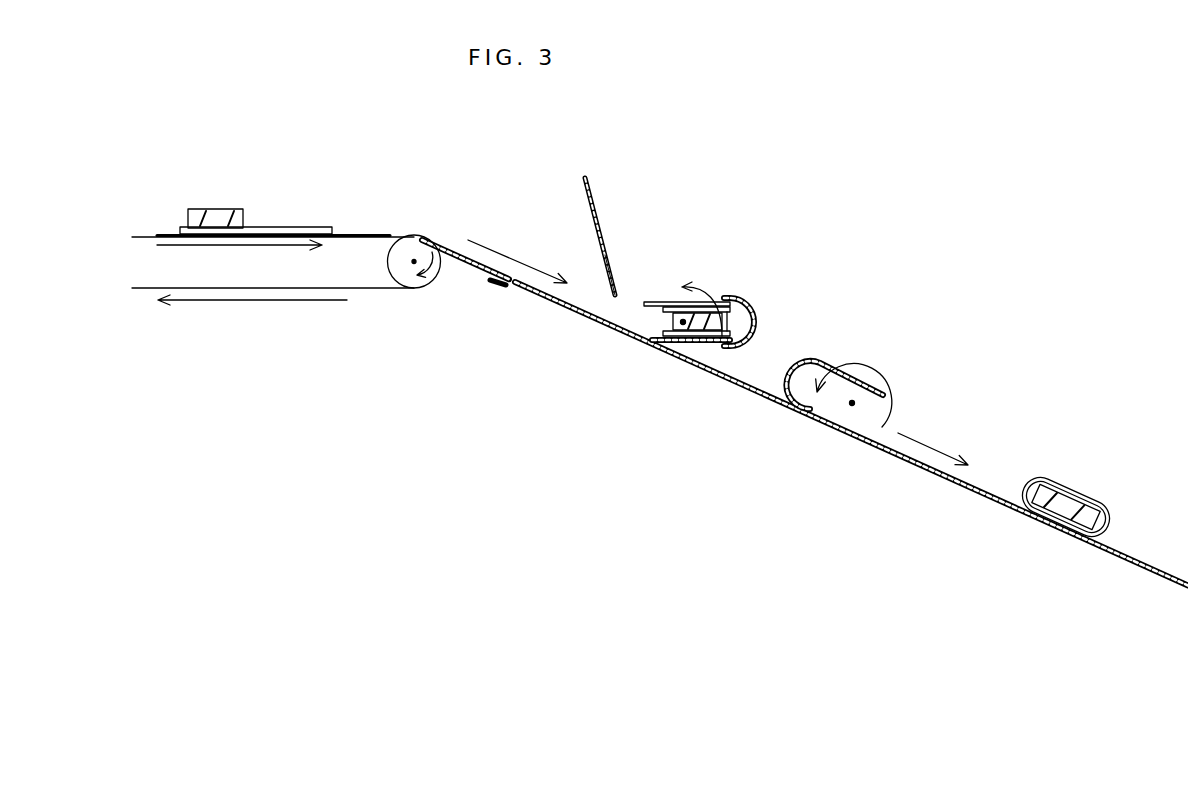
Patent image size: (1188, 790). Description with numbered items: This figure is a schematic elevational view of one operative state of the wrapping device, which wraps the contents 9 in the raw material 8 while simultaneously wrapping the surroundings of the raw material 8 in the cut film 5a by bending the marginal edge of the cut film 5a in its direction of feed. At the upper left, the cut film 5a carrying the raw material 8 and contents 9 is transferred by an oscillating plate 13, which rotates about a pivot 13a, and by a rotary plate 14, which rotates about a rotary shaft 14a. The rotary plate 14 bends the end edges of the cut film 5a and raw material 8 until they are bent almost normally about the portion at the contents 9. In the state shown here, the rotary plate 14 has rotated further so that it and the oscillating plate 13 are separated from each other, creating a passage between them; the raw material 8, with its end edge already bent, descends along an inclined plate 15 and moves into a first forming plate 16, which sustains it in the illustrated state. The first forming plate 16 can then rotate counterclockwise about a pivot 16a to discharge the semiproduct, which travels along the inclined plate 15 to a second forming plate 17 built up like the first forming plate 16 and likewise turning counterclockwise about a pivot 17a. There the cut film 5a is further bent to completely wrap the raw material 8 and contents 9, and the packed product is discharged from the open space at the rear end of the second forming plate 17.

The cut film 5a is at (263, 238).
The raw material 8 is at (292, 227).
The contents 9 is at (222, 212).
The oscillating plate 13 is at (500, 287).
The pivot 13a is at (421, 238).
The rotary plate 14 is at (593, 193).
The rotary shaft 14a is at (605, 240).
The inclined plate 15 is at (700, 343).
The first forming plate 16 is at (748, 302).
The pivot 16a is at (683, 324).
The second forming plate 17 is at (820, 367).
The pivot 17a is at (852, 406).